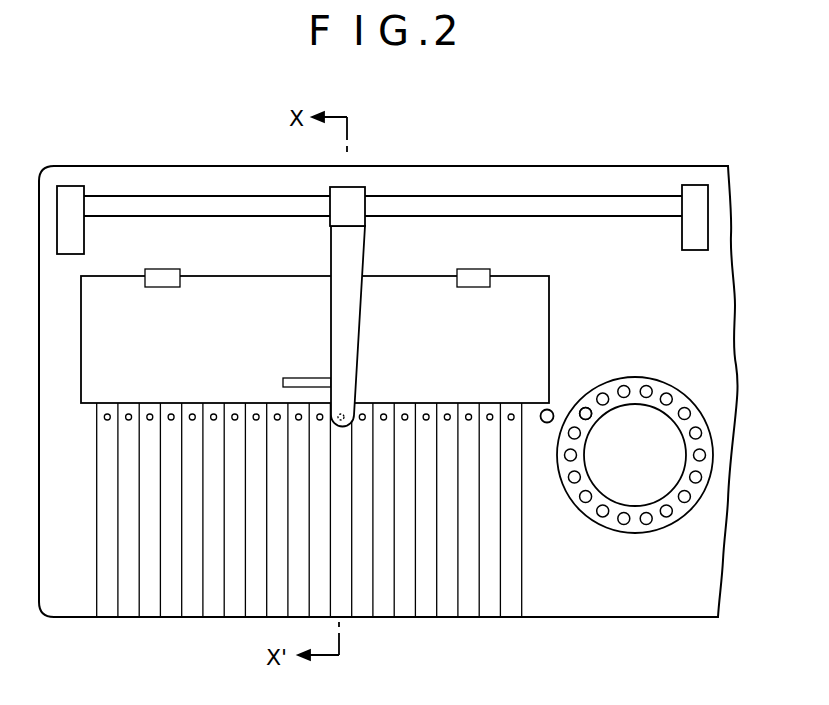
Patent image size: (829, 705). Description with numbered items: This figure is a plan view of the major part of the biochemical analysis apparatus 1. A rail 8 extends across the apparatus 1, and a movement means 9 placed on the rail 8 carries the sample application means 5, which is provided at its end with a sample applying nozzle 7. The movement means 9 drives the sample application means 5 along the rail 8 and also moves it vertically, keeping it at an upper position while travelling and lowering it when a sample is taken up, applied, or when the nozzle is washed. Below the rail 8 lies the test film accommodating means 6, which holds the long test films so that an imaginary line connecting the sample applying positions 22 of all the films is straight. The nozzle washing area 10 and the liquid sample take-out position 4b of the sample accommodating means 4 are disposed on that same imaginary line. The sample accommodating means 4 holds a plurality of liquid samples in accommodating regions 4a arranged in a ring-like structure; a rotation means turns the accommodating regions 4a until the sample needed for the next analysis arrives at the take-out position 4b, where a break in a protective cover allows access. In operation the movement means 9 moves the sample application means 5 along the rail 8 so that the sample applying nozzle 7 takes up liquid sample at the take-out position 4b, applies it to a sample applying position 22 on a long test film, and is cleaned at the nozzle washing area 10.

The apparatus 1 is at (577, 165).
The sample accommodating means 4 is at (678, 388).
The accommodating regions 4a is at (705, 454).
The liquid sample take-out position 4b is at (590, 406).
The sample application means 5 is at (331, 331).
The test film accommodating means 6 is at (123, 376).
The sample applying nozzle 7 is at (343, 402).
The rail 8 is at (463, 203).
The movement means 9 is at (357, 197).
The nozzle washing area 10 is at (541, 409).
The sample applying positions 22 is at (447, 410).